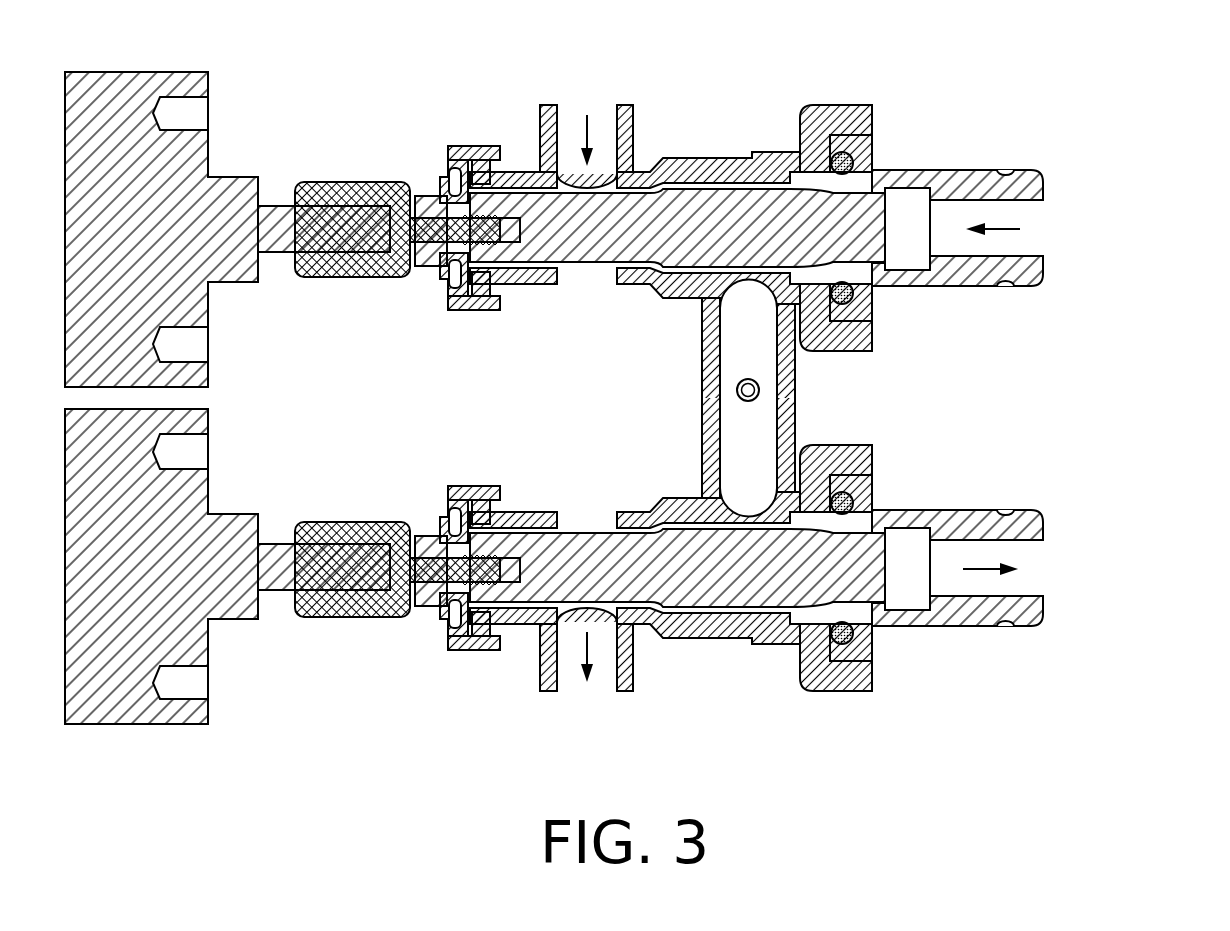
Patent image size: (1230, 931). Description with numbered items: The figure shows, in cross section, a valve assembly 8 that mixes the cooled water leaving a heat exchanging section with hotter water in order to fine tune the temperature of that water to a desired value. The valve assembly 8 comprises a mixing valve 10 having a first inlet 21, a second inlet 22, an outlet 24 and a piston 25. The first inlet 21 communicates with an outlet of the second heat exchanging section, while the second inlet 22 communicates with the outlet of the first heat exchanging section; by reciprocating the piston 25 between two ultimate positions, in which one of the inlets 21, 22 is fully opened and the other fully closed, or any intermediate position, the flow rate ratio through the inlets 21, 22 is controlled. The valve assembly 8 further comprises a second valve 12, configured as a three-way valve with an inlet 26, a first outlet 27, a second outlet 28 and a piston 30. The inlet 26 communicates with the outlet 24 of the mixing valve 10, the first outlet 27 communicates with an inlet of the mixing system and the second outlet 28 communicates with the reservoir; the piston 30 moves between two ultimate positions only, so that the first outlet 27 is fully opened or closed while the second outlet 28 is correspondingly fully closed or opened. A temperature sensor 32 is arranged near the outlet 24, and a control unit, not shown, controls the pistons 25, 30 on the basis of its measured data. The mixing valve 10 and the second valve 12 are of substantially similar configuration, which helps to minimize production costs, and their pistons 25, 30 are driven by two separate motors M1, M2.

The valve assembly 8 is at (1090, 76).
The mixing valve 10 is at (1160, 229).
The second valve 12 is at (1160, 572).
The first inlet 21 is at (604, 103).
The second inlet 22 is at (1033, 213).
The outlet 24 is at (732, 345).
The piston 25 is at (735, 241).
The inlet 26 is at (732, 455).
The first outlet 27 is at (603, 690).
The second outlet 28 is at (1033, 553).
The piston 30 is at (735, 582).
The temperature sensor 32 is at (760, 390).
The motor M1 is at (77, 232).
The motor M2 is at (77, 576).